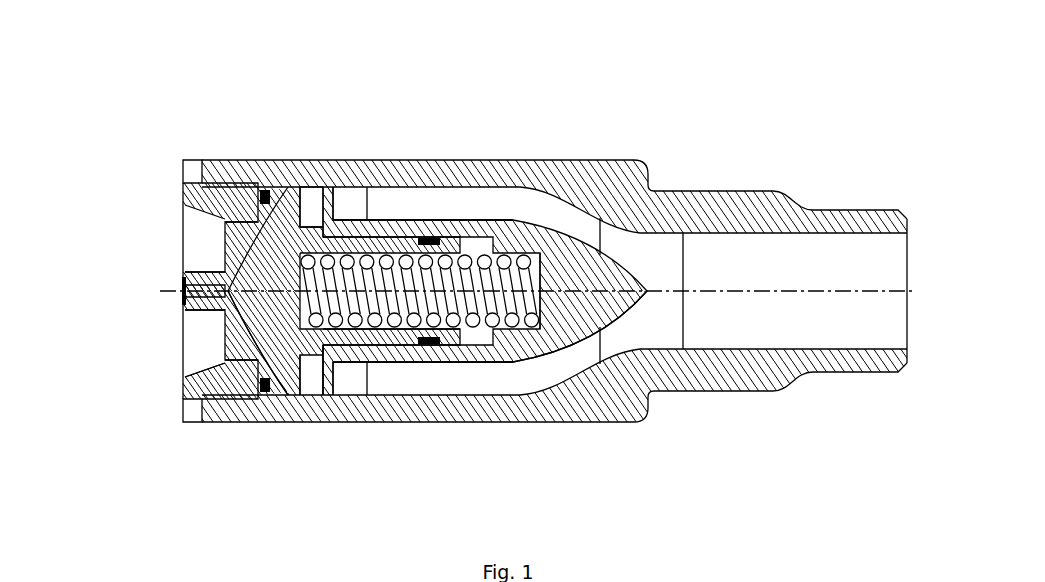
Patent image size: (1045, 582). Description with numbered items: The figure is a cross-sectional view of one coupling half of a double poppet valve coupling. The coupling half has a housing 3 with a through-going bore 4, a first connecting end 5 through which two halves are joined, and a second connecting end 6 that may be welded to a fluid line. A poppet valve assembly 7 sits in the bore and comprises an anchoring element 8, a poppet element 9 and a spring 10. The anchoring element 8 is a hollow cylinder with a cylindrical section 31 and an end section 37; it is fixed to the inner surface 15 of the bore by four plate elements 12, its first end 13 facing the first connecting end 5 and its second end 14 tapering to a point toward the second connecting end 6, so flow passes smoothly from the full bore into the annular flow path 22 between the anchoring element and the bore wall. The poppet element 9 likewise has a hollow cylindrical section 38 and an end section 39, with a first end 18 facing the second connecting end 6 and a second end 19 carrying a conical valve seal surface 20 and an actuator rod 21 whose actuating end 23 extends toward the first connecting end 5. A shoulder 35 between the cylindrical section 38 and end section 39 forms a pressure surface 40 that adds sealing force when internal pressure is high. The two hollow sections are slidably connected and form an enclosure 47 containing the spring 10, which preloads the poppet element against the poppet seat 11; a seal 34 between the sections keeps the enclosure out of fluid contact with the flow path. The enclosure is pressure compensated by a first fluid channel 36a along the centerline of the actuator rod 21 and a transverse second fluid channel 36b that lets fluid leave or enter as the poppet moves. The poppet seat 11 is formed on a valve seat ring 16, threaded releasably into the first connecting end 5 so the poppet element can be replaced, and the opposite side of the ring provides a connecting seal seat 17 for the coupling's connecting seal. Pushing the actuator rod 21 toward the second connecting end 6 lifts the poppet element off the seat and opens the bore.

The housing 3 is at (592, 160).
The through-going bore 4 is at (707, 287).
The first connecting end 5 is at (176, 330).
The second connecting end 6 is at (902, 291).
The poppet valve assembly 7 is at (396, 220).
The anchoring element 8 is at (512, 348).
The poppet element 9 is at (292, 358).
The spring 10 is at (401, 312).
The poppet seat 11 is at (280, 360).
The plate elements 12 is at (567, 358).
The first end 13 is at (334, 362).
The second end 14 is at (594, 257).
The inner surface 15 is at (474, 228).
The valve seat ring 16 is at (285, 355).
The connecting seal seat 17 is at (216, 232).
The first end 18 is at (458, 342).
The second end 19 is at (225, 320).
The conical valve seal surface 20 is at (288, 357).
The actuator rod 21 is at (205, 318).
The annular flow path 22 is at (502, 200).
The actuating end 23 is at (181, 295).
The cylindrical section 31 is at (438, 228).
The seal 34 is at (429, 238).
The shoulder 35 is at (297, 218).
The first fluid channel 36a is at (258, 217).
The second fluid channel 36b is at (207, 283).
The end section 37 is at (570, 310).
The cylindrical section 38 is at (385, 315).
The end section 39 is at (278, 255).
The pressure surface 40 is at (303, 187).
The enclosure 47 is at (423, 305).